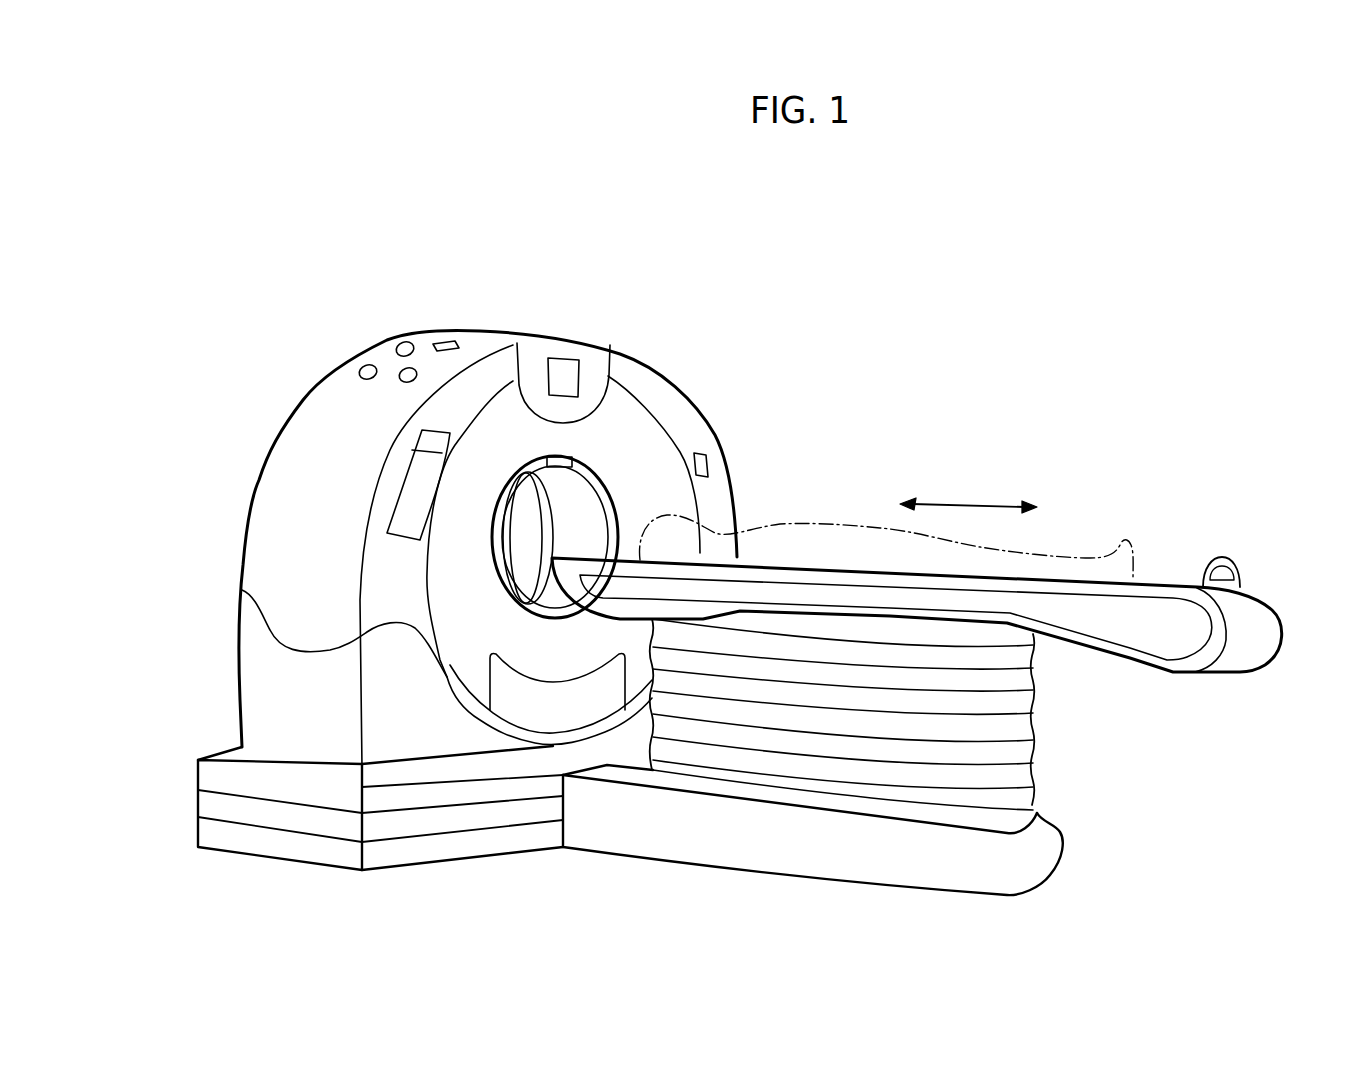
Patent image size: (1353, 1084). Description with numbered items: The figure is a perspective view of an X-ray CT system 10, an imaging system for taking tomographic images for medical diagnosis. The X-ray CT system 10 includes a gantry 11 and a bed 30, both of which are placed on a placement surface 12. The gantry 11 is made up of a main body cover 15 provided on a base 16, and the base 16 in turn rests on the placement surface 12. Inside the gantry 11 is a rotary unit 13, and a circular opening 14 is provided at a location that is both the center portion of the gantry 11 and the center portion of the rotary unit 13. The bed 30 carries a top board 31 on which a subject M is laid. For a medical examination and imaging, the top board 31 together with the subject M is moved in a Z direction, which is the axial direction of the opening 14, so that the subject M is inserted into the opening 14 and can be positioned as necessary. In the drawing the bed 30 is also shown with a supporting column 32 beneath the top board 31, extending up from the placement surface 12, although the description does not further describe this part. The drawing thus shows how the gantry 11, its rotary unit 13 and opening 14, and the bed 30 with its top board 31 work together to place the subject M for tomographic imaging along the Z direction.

The X-ray CT system 10 is at (773, 270).
The gantry 11 is at (314, 372).
The placement surface 12 is at (569, 897).
The rotary unit 13 is at (568, 510).
The opening 14 is at (586, 527).
The main body cover 15 is at (247, 538).
The base 16 is at (286, 848).
The bed 30 is at (1012, 452).
The top board 31 is at (1160, 583).
The table support (pedestal) 32 is at (1015, 755).
The subject M is at (837, 520).
The Z direction Z is at (947, 503).